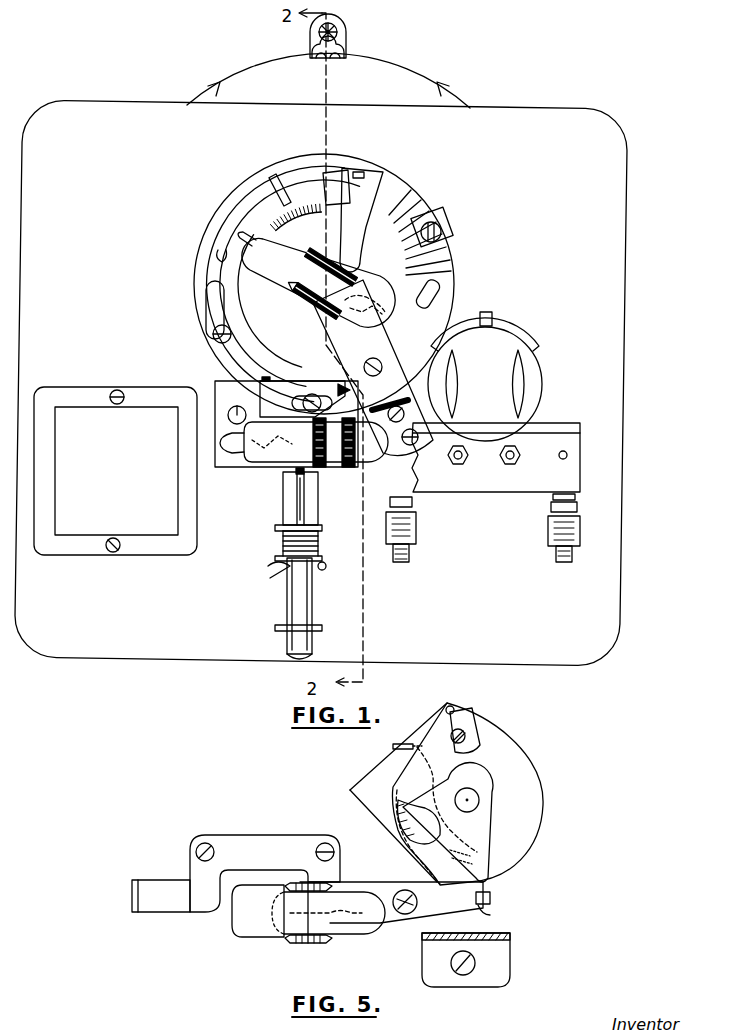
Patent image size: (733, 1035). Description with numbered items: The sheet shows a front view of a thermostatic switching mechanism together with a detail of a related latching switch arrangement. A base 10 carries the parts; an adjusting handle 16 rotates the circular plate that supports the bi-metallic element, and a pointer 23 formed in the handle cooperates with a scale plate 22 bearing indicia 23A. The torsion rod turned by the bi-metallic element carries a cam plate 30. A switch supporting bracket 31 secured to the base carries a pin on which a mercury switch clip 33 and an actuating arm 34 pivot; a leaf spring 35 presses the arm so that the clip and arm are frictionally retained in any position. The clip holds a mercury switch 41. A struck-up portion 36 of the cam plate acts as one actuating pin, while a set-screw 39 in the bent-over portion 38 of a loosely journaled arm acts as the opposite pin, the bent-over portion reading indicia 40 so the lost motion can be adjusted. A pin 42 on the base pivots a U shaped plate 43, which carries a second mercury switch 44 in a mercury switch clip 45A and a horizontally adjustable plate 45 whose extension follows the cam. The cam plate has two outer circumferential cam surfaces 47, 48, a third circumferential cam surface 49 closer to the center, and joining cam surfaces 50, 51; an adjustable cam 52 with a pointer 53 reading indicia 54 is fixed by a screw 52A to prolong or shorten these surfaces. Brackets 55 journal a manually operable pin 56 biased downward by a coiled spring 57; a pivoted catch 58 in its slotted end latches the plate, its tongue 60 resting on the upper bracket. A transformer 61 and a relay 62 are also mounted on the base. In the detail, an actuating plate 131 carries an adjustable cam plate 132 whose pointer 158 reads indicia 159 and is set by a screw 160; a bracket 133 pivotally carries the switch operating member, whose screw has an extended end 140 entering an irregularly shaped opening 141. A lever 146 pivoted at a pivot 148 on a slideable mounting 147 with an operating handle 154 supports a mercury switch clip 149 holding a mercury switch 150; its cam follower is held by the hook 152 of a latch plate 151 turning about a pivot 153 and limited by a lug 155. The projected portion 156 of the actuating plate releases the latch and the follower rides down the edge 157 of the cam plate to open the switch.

In FIG. 1, the base 10 is at (610, 144).
In FIG. 1, the adjusting handle 16 is at (336, 26).
In FIG. 1, the scale plate 22 is at (400, 73).
In FIG. 1, the pointer 23 is at (344, 56).
In FIG. 1, the indicia 23A is at (310, 58).
In FIG. 1, the cam plate 30 is at (398, 188).
In FIG. 1, the switch supporting bracket 31 is at (400, 402).
In FIG. 1, the mercury switch clip 33 is at (352, 286).
In FIG. 1, the actuating arm 34 is at (356, 270).
In FIG. 1, the leaf spring 35 is at (444, 300).
In FIG. 1, the struck-up portion 36 is at (366, 171).
In FIG. 1, the bent-over portion 38 is at (440, 222).
In FIG. 1, the set-screw 39 is at (446, 240).
In FIG. 1, the indicia 40 is at (450, 268).
In FIG. 1, the mercury switch 41 is at (276, 276).
In FIG. 1, the pin 42 is at (234, 404).
In FIG. 1, the U shaped plate 43 is at (236, 468).
In FIG. 1, the second mercury switch 44 is at (286, 445).
In FIG. 1, the horizontally adjustable plate 45 is at (299, 402).
In FIG. 1, the mercury switch clip 45A is at (354, 456).
In FIG. 1, the circumferential cam surface 47 is at (396, 362).
In FIG. 1, the circumferential cam surface 48 is at (240, 238).
In FIG. 1, the third circumferential cam surface 49 is at (208, 312).
In FIG. 1, the cam surface 50 is at (306, 382).
In FIG. 1, the cam surface 51 is at (214, 264).
In FIG. 1, the adjustable cam 52 is at (232, 206).
In FIG. 1, the screw 52A is at (216, 340).
In FIG. 1, the pointer 53 is at (290, 200).
In FIG. 1, the indicia 54 is at (324, 216).
In FIG. 1, the brackets 55 is at (320, 531).
In FIG. 1, the manually operable pin 56 is at (312, 612).
In FIG. 1, the coiled spring 57 is at (283, 548).
In FIG. 1, the pivoted catch 58 is at (310, 490).
In FIG. 1, the tongue 60 is at (304, 510).
In FIG. 1, the transformer 61 is at (88, 526).
In FIG. 1, the relay 62 is at (556, 408).
In FIG. 5, the actuating plate 131 is at (540, 792).
In FIG. 5, the adjustable cam plate 132 is at (480, 825).
In FIG. 5, the bracket 133 is at (502, 956).
In FIG. 5, the extended end 140 is at (464, 732).
In FIG. 5, the irregularly shaped opening 141 is at (453, 706).
In FIG. 5, the lever 146 is at (390, 930).
In FIG. 5, the slideable mounting 147 is at (168, 880).
In FIG. 5, the pivot 148 is at (412, 881).
In FIG. 5, the mercury switch clip 149 is at (307, 944).
In FIG. 5, the mercury switch 150 is at (260, 930).
In FIG. 5, the latch plate 151 is at (350, 790).
In FIG. 5, the hook 152 is at (490, 912).
In FIG. 5, the pivot 153 is at (500, 880).
In FIG. 5, the operating handle 154 is at (134, 896).
In FIG. 5, the lug 155 is at (402, 744).
In FIG. 5, the projected portion 156 is at (492, 896).
In FIG. 5, the edge 157 is at (428, 878).
In FIG. 5, the pointer 158 is at (406, 806).
In FIG. 5, the indicia 159 is at (372, 812).
In FIG. 5, the screw 160 is at (444, 876).